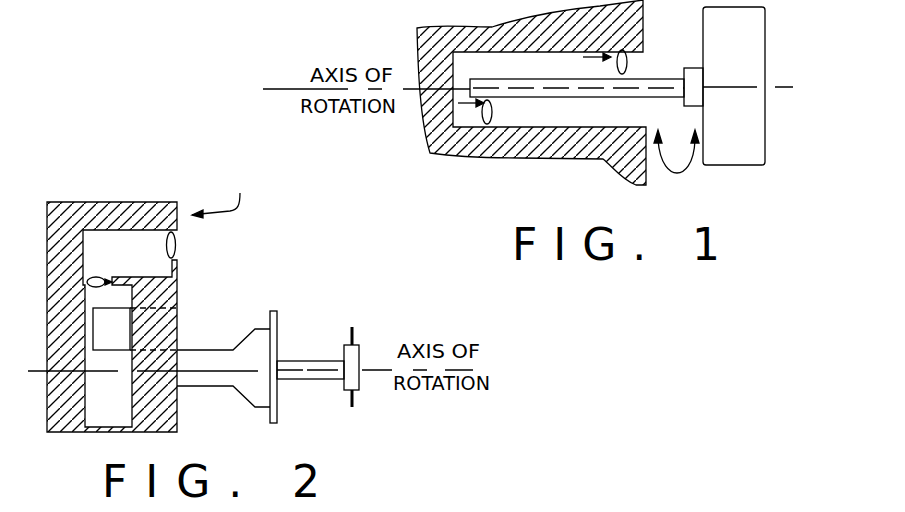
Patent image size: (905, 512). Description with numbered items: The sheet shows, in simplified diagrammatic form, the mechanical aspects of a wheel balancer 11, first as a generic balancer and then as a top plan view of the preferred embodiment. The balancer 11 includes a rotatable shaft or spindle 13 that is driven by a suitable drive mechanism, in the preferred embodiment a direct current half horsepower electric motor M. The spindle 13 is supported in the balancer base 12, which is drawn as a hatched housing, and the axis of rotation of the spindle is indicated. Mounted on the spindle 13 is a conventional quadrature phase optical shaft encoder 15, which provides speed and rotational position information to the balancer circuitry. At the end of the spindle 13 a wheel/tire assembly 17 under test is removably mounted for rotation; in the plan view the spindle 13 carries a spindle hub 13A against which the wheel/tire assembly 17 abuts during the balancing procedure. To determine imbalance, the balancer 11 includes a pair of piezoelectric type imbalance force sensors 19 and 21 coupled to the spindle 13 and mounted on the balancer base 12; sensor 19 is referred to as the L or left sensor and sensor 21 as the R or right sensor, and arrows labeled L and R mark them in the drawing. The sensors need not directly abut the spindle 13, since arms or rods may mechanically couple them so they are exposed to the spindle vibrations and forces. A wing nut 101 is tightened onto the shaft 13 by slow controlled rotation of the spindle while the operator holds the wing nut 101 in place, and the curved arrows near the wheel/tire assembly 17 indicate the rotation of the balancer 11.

In FIG. 1, the wheel balancer 11 is at (676, 163).
In FIG. 2, the wheel balancer 11 is at (222, 194).
In FIG. 1, the balancer base 12 is at (612, 38).
In FIG. 2, the balancer base 12 is at (98, 434).
In FIG. 1, the spindle 13 is at (667, 97).
In FIG. 2, the spindle 13 is at (313, 359).
In FIG. 2, the spindle hub 13A is at (278, 403).
In FIG. 1, the optical shaft encoder 15 is at (698, 68).
In FIG. 2, the optical shaft encoder 15 is at (178, 350).
In FIG. 1, the wheel/tire assembly 17 is at (765, 113).
In FIG. 1, the imbalance force sensor 19 is at (493, 112).
In FIG. 2, the imbalance force sensor 19 is at (98, 276).
In FIG. 1, the imbalance force sensor 21 is at (628, 62).
In FIG. 2, the imbalance force sensor 21 is at (177, 244).
In FIG. 2, the wing nut 101 is at (360, 348).